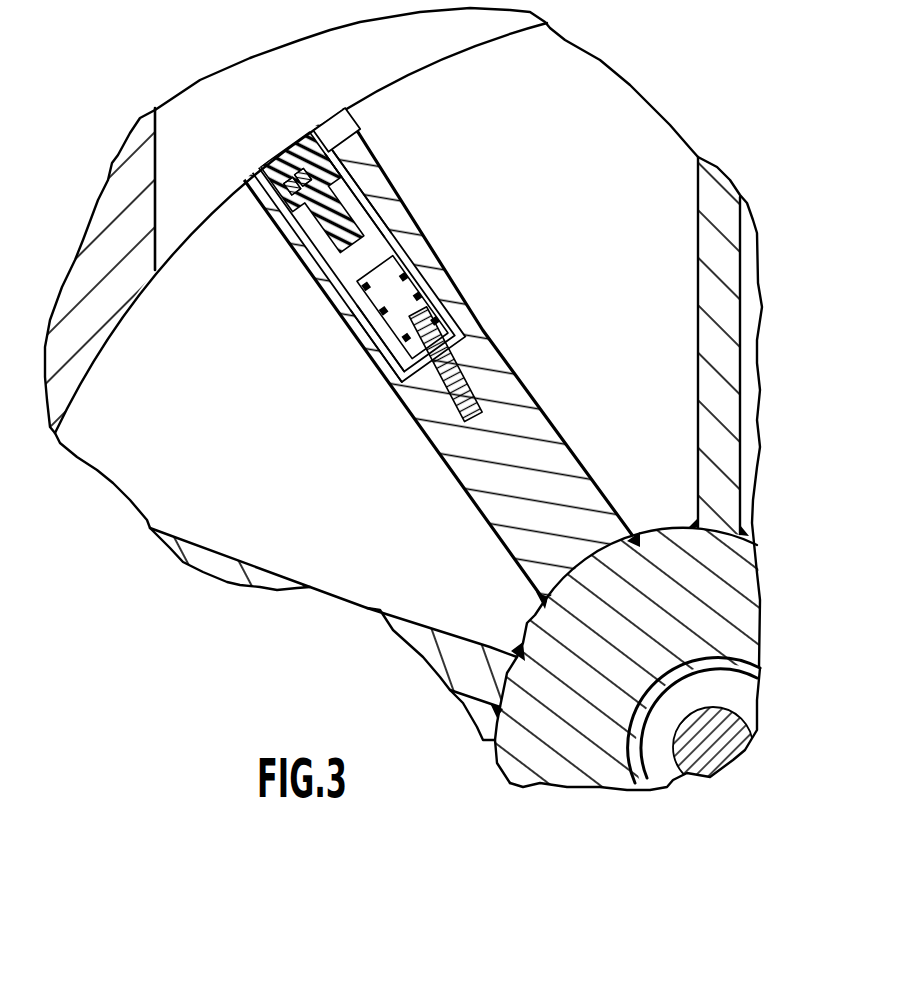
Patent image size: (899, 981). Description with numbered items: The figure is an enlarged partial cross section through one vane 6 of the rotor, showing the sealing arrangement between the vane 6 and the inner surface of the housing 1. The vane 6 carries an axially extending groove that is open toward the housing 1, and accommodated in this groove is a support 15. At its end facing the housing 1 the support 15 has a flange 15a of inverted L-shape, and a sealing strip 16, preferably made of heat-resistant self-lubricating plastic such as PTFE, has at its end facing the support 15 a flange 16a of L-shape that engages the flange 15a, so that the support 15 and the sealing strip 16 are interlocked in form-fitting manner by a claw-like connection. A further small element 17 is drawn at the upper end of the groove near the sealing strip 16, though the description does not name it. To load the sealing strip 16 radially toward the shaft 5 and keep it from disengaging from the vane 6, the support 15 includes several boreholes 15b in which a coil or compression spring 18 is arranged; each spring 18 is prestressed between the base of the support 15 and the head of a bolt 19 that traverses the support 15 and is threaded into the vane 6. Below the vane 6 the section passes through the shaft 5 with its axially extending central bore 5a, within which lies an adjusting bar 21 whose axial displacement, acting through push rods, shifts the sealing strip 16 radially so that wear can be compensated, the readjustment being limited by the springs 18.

The housing 1 is at (112, 237).
The shaft 5 is at (449, 490).
The central bore 5a is at (640, 782).
The vane 6 is at (443, 437).
The support 15 is at (346, 232).
The flange 15a is at (368, 205).
The boreholes 15b is at (373, 330).
The sealing strip 16 is at (325, 201).
The flange 16a is at (327, 247).
The cap 17 is at (340, 152).
The compression spring 18 is at (433, 290).
The bolt 19 is at (463, 363).
The adjusting bar 21 is at (697, 750).